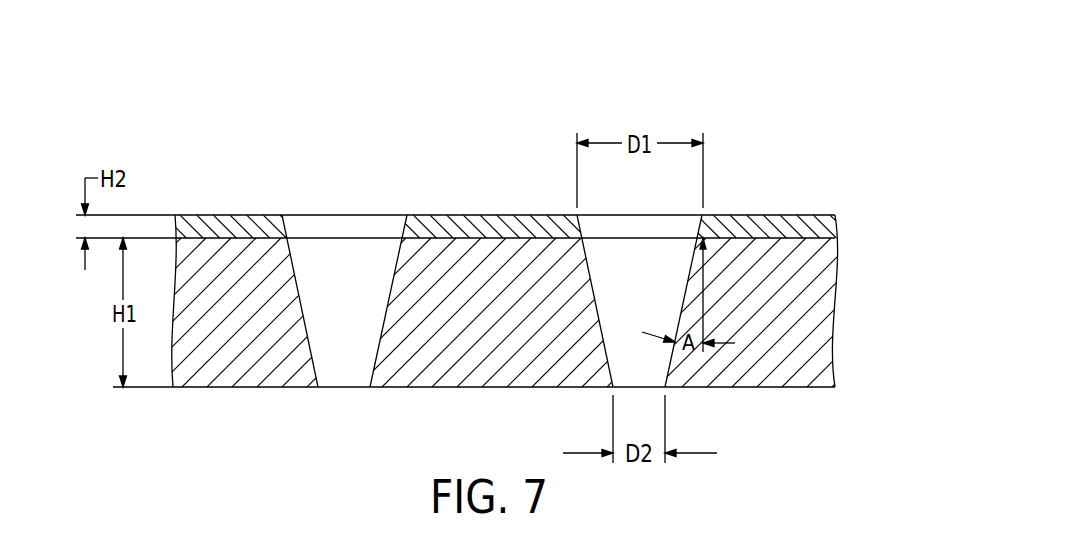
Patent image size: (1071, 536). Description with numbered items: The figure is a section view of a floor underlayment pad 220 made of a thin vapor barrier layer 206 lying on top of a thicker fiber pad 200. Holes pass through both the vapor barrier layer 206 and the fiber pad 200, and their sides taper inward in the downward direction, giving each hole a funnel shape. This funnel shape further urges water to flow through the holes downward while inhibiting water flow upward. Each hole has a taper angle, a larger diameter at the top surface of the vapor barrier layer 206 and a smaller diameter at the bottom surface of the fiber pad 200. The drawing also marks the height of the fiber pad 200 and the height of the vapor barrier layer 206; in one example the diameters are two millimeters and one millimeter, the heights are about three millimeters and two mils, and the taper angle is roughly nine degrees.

The floor underlayment pad 220 is at (248, 158).
The vapor barrier layer 206 is at (823, 225).
The fiber pad 200 is at (823, 305).